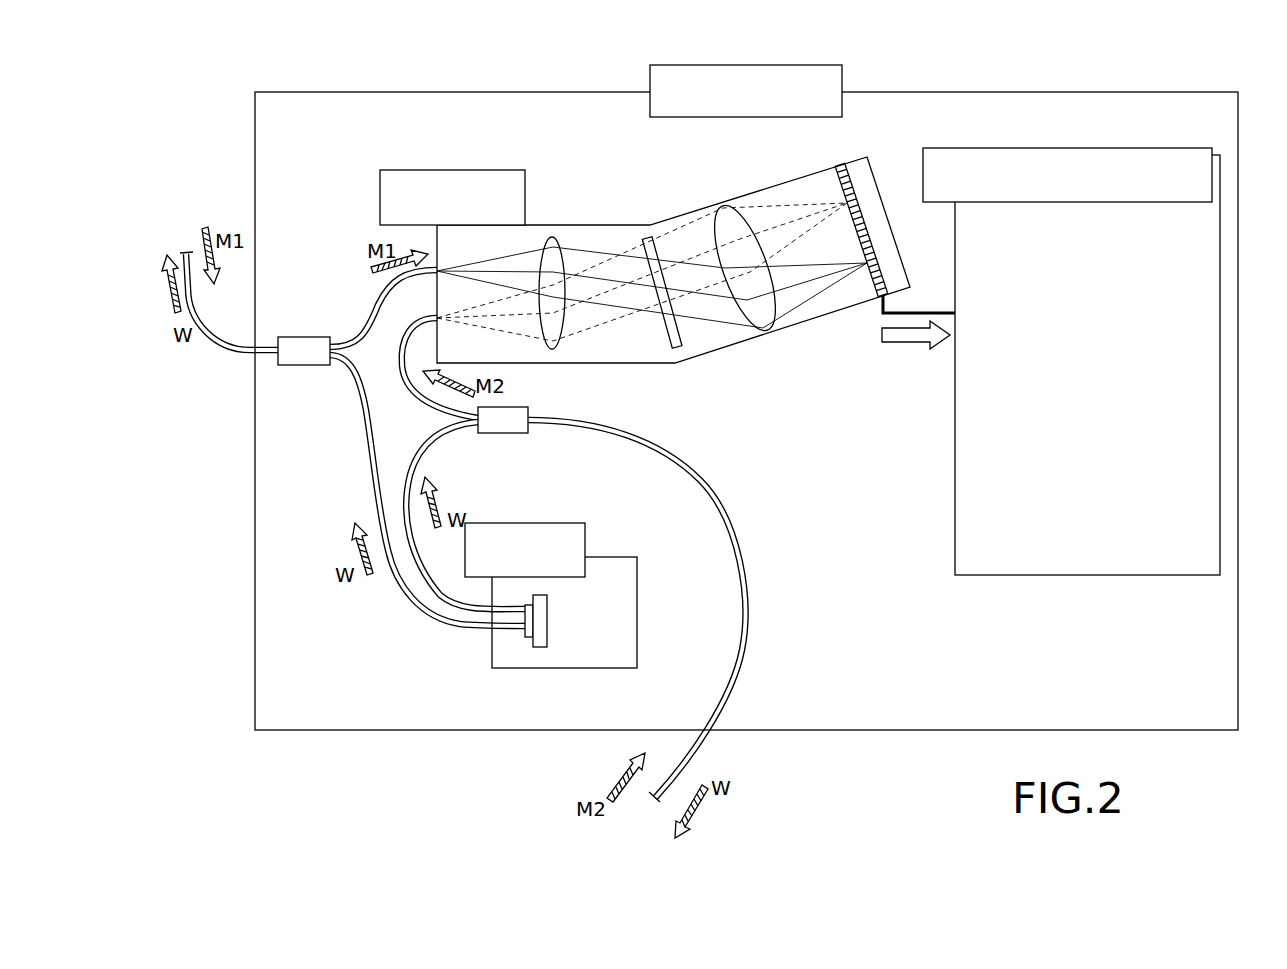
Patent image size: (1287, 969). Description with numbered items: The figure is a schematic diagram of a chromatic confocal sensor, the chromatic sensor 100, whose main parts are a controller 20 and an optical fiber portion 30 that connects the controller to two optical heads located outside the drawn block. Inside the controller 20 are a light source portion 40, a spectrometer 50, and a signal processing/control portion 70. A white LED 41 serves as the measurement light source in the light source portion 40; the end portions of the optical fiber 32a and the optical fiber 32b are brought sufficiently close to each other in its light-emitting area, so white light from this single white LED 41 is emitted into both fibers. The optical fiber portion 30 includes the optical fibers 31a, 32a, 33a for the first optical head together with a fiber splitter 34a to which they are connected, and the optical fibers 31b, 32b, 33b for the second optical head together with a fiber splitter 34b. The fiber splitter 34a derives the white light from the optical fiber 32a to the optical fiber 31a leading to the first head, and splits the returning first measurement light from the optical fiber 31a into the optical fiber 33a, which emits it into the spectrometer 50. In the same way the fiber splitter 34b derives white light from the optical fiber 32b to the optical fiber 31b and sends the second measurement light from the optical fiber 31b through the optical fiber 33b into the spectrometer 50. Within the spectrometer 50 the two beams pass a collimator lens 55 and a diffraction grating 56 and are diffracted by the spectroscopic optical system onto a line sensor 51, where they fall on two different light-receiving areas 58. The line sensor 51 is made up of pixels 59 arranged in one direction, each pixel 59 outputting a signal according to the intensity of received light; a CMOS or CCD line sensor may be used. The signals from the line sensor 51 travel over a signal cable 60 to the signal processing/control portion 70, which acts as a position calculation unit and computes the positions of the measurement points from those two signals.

The chromatic sensor 100 is at (523, 62).
The controller 20 is at (600, 82).
The optical fiber portion 30 is at (326, 462).
The optical fiber 31a is at (228, 346).
The optical fiber 31b is at (744, 628).
The optical fiber 32a is at (413, 618).
The optical fiber 32b is at (438, 442).
The optical fiber 33a is at (367, 317).
The optical fiber 33b is at (403, 368).
The fiber splitter 34a is at (292, 337).
The fiber splitter 34b is at (513, 435).
The light source portion 40 is at (612, 557).
The white LED 41 is at (541, 647).
The spectrometer 50 is at (724, 200).
The line sensor 51 is at (866, 222).
The collimator lens 55 is at (553, 236).
The diffraction grating 56 is at (651, 238).
The light-receiving area 58 is at (768, 331).
The pixel 59 is at (856, 190).
The signal cable 60 is at (936, 311).
The signal processing/control portion 70 is at (955, 448).